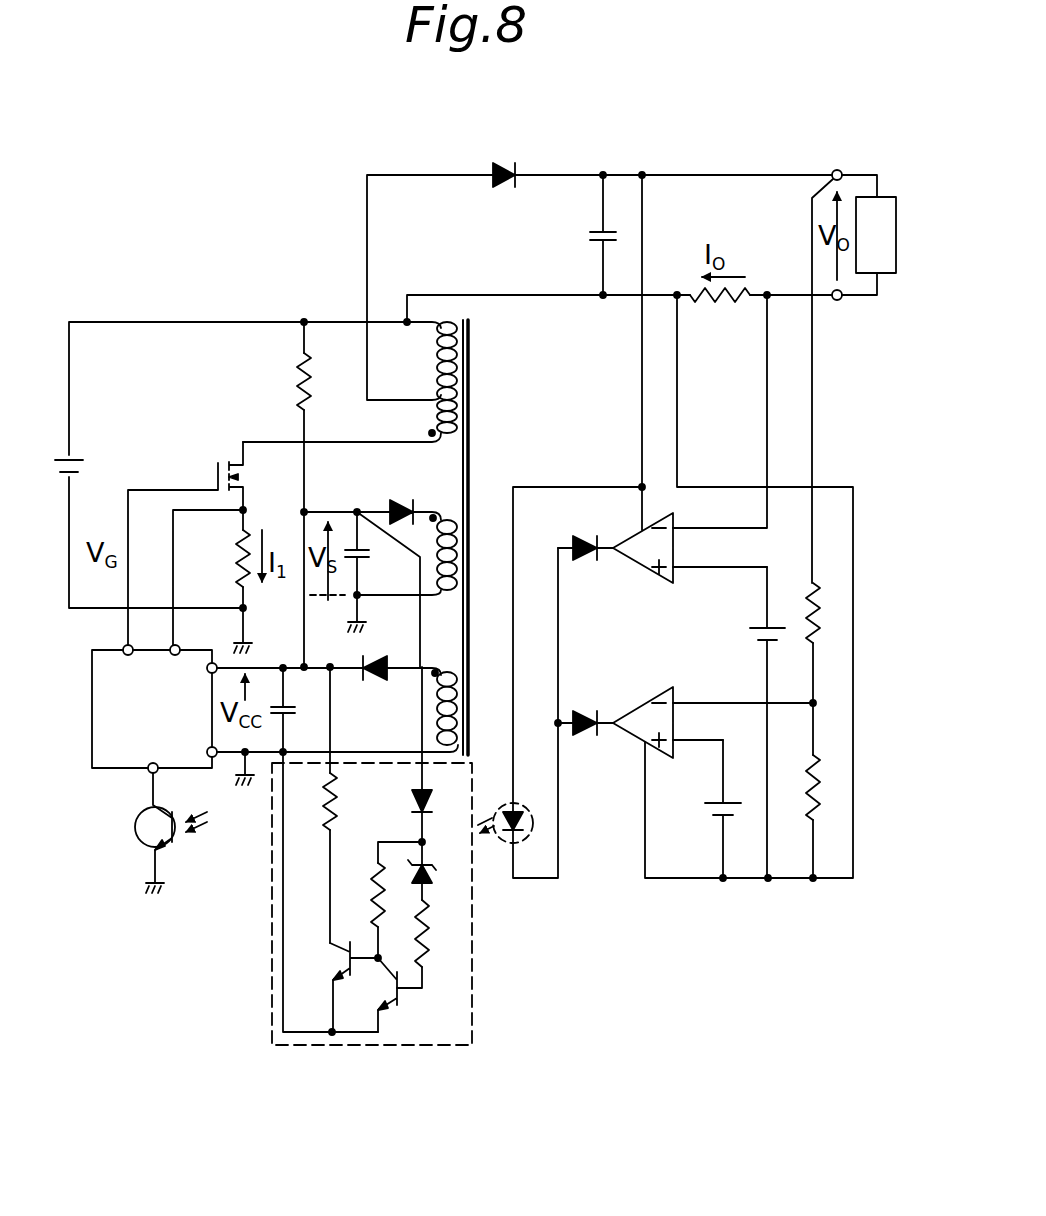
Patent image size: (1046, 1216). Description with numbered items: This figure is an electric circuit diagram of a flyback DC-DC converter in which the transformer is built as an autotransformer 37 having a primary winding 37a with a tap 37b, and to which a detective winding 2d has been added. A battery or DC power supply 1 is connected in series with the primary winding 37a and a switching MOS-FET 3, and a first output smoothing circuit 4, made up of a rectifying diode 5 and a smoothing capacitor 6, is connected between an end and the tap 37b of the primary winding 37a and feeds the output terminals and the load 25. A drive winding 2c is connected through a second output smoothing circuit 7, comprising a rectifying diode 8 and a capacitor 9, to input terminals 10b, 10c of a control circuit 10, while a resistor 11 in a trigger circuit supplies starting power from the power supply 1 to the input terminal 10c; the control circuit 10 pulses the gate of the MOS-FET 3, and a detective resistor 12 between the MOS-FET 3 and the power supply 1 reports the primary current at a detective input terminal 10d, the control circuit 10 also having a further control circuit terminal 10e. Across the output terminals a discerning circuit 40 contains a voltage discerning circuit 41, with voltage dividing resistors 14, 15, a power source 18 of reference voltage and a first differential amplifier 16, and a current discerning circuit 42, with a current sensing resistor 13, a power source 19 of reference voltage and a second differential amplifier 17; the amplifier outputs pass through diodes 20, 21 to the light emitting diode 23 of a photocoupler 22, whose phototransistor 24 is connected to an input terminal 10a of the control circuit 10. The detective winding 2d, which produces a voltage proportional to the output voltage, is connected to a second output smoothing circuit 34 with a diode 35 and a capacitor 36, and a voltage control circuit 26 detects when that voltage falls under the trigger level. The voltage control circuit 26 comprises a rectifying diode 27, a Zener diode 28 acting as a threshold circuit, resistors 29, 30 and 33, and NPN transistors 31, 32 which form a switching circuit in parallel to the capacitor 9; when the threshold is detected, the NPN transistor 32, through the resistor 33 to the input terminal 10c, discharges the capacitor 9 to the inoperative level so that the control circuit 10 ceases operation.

The battery or DC power supply 1 is at (58, 456).
The MOS-FET 3 is at (219, 466).
The first output smoothing circuit 4 is at (562, 160).
The rectifying diode 5 is at (503, 184).
The smoothing capacitor 6 is at (588, 232).
The second output smoothing circuit 7 is at (328, 604).
The rectifying diode 8 is at (374, 670).
The capacitor 9 is at (292, 710).
The control circuit 10 is at (133, 721).
The input terminal 10a is at (158, 770).
The input terminal 10b is at (206, 752).
The input terminal 10c is at (208, 670).
The detective input terminal 10d is at (172, 656).
The control circuit terminal 10e is at (124, 648).
The resistor 11 is at (292, 388).
The detective resistor 12 is at (232, 574).
The resistor 13 is at (718, 306).
The voltage dividing resistor 14 is at (838, 568).
The voltage dividing resistor 15 is at (838, 745).
The first differential amplifier 16 is at (632, 700).
The second differential amplifier 17 is at (632, 570).
The power source of reference voltage 18 is at (722, 802).
The power source of reference voltage 19 is at (774, 620).
The diode 20 is at (588, 726).
The diode 21 is at (593, 538).
The photocoupler 22 is at (185, 854).
The light emitting diode 23 is at (502, 810).
The phototransistor 24 is at (138, 834).
The load 25 is at (878, 196).
The voltage control circuit 26 is at (402, 856).
The rectifying diode 27 is at (410, 810).
The Zener diode 28 is at (426, 871).
The resistor 29 is at (428, 940).
The resistor 30 is at (375, 894).
The NPN transistor 31 is at (389, 1002).
The NPN transistor 32 is at (338, 976).
The resistor 33 is at (330, 828).
The second output smoothing circuit 34 is at (373, 558).
The diode 35 is at (402, 504).
The capacitor 36 is at (366, 556).
The autotransformer 37 is at (459, 376).
The primary winding 37a is at (468, 424).
The tap 37b is at (438, 400).
The drive winding 2c is at (454, 672).
The detective winding 2d is at (439, 512).
The discerning circuit 40 is at (683, 570).
The voltage discerning circuit 41 is at (685, 772).
The current discerning circuit 42 is at (682, 683).